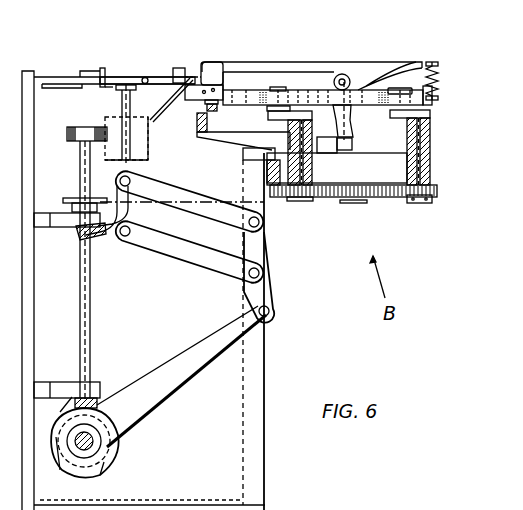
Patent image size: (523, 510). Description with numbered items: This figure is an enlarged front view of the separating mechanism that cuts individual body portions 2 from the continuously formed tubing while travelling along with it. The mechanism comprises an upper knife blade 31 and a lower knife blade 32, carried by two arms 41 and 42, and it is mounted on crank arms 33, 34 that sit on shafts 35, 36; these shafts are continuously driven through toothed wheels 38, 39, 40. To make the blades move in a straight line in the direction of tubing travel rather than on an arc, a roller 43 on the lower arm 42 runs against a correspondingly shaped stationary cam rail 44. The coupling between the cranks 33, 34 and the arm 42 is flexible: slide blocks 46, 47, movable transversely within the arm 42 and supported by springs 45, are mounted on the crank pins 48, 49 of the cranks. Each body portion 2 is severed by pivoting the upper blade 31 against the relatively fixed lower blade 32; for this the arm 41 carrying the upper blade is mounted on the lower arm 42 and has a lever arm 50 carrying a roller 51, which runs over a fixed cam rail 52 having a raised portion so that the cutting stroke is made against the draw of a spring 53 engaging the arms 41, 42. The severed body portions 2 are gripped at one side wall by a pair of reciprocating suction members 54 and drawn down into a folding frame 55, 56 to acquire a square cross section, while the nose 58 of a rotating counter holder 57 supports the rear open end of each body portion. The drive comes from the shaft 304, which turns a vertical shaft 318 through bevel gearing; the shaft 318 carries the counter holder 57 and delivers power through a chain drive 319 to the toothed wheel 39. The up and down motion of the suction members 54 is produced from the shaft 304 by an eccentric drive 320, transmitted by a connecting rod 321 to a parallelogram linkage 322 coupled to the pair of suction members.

The body portion 2 is at (123, 77).
The upper knife blade 31 is at (160, 76).
The lower knife blade 32 is at (80, 88).
The crank arm 33 is at (261, 157).
The crank arm 34 is at (430, 116).
The shaft 35 is at (304, 173).
The shaft 36 is at (425, 163).
The toothed wheel 38 is at (305, 190).
The toothed wheel 39 is at (385, 198).
The toothed wheel 40 is at (438, 203).
The arm 41 is at (262, 62).
The lower arm 42 is at (237, 97).
The roller 43 is at (220, 118).
The cam rail 44 is at (199, 136).
The spring 45 is at (262, 95).
The slide block 46 is at (295, 88).
The slide block 47 is at (412, 90).
The crank pin 48 is at (278, 87).
The crank pin 49 is at (398, 88).
The lever arm 50 is at (352, 115).
The roller 51 is at (352, 146).
The cam rail 52 is at (333, 141).
The spring 53 is at (438, 80).
The suction member 54 is at (122, 99).
The folding frame 55 is at (100, 69).
The folding frame 56 is at (198, 120).
The counter holder 57 is at (75, 141).
The nose 58 is at (90, 200).
The shaft 304 is at (92, 447).
The vertical shaft 318 is at (88, 345).
The chain drive 319 is at (342, 203).
The eccentric drive 320 is at (66, 472).
The connecting rod 321 is at (158, 392).
The parallelogram linkage 322 is at (152, 193).